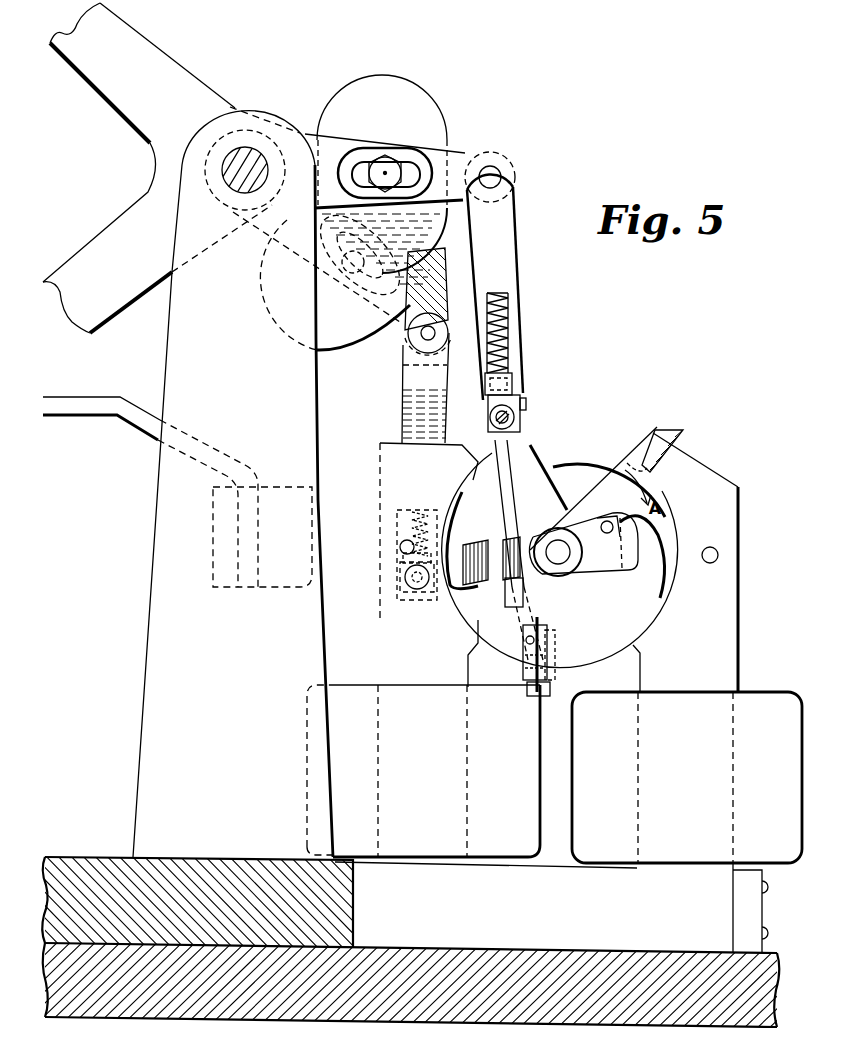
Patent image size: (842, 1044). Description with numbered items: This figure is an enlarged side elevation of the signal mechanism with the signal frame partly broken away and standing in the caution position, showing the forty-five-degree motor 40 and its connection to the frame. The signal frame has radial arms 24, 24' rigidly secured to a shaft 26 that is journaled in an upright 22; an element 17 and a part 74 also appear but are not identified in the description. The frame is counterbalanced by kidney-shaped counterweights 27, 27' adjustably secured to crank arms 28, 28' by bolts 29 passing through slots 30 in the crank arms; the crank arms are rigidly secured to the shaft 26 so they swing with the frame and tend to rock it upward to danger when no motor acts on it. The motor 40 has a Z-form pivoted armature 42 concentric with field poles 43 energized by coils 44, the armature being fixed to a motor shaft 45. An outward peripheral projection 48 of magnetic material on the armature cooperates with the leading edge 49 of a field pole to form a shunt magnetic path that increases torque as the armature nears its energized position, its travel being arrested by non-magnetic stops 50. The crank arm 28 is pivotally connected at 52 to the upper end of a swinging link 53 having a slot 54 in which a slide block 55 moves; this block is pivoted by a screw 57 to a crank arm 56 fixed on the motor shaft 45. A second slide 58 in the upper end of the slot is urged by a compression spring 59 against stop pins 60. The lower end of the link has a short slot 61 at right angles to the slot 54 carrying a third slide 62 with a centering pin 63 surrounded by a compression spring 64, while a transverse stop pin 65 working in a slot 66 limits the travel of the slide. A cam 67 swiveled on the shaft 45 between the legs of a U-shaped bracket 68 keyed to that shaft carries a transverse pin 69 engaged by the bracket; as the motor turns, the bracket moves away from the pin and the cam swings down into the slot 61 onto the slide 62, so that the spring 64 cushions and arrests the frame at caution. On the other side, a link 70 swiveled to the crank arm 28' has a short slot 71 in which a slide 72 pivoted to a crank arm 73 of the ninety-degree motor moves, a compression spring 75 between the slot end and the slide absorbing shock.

The arm 17 is at (90, 407).
The upright 22 is at (167, 643).
The radial arm 24 is at (107, 313).
The radial arm 24' is at (139, 142).
The shaft 26 is at (238, 172).
The counterweight 27 is at (395, 206).
The counterweight 27' is at (309, 285).
The crank arm 28 is at (487, 147).
The crank arm 28' is at (431, 295).
The bolt 29 is at (388, 160).
The slot 30 is at (357, 173).
The motor 40 is at (720, 652).
The armature 42 is at (600, 450).
The field pole 43 is at (710, 492).
The coil 44 is at (554, 774).
The motor shaft 45 is at (566, 560).
The peripheral projection 48 is at (663, 430).
The leading edge of field pole 49 is at (673, 450).
The stop 50 is at (670, 460).
The pivotal connection 52 is at (490, 177).
The swinging link 53 is at (500, 258).
The slot 54 is at (500, 510).
The slide block 55 is at (513, 420).
The crank arm 56 is at (605, 452).
The screw 57 is at (526, 405).
The second slide 58 is at (507, 377).
The compression spring 59 is at (505, 317).
The stop pin 60 is at (522, 407).
The short slot 61 is at (545, 585).
The third slide 62 is at (527, 660).
The centering pin 63 is at (552, 685).
The compression spring 64 is at (527, 665).
The transverse stop pin 65 is at (540, 627).
The slot 66 is at (525, 650).
The cam 67 is at (590, 592).
The U-shaped bracket 68 is at (635, 560).
The transverse pin 69 is at (606, 525).
The link 70 is at (407, 408).
The short slot 71 is at (410, 540).
The slide 72 is at (410, 575).
The crank arm 73 is at (467, 577).
The housing 74 is at (405, 593).
The compression spring 75 is at (413, 522).